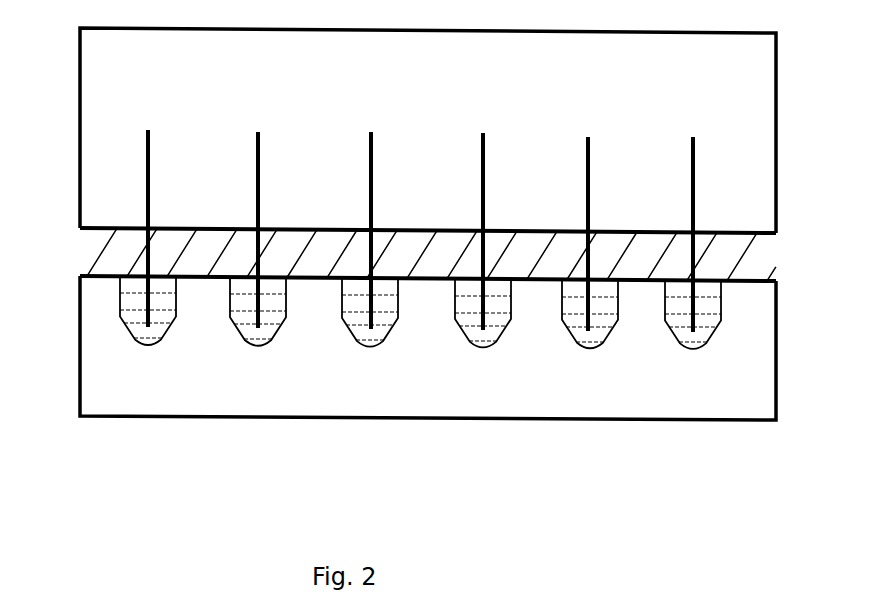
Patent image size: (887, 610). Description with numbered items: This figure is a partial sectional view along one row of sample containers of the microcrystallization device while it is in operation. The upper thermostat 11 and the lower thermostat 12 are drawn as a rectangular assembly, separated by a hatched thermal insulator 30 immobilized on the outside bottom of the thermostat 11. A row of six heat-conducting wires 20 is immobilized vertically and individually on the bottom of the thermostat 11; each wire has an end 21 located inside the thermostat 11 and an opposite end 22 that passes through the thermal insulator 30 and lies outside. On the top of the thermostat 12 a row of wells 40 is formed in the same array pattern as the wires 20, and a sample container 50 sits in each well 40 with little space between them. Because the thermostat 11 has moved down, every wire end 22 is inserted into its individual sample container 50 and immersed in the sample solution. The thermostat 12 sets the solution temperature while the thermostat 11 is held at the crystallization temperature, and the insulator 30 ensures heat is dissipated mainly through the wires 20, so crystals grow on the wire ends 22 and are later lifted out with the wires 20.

The thermostat 11 is at (80, 51).
The thermostat 12 is at (78, 367).
The thermal insulator 30 is at (93, 255).
The wire 20 is at (700, 202).
The wire end 21 is at (490, 138).
The wire end 22 is at (597, 322).
The well 40 is at (420, 389).
The sample container 50 is at (420, 389).